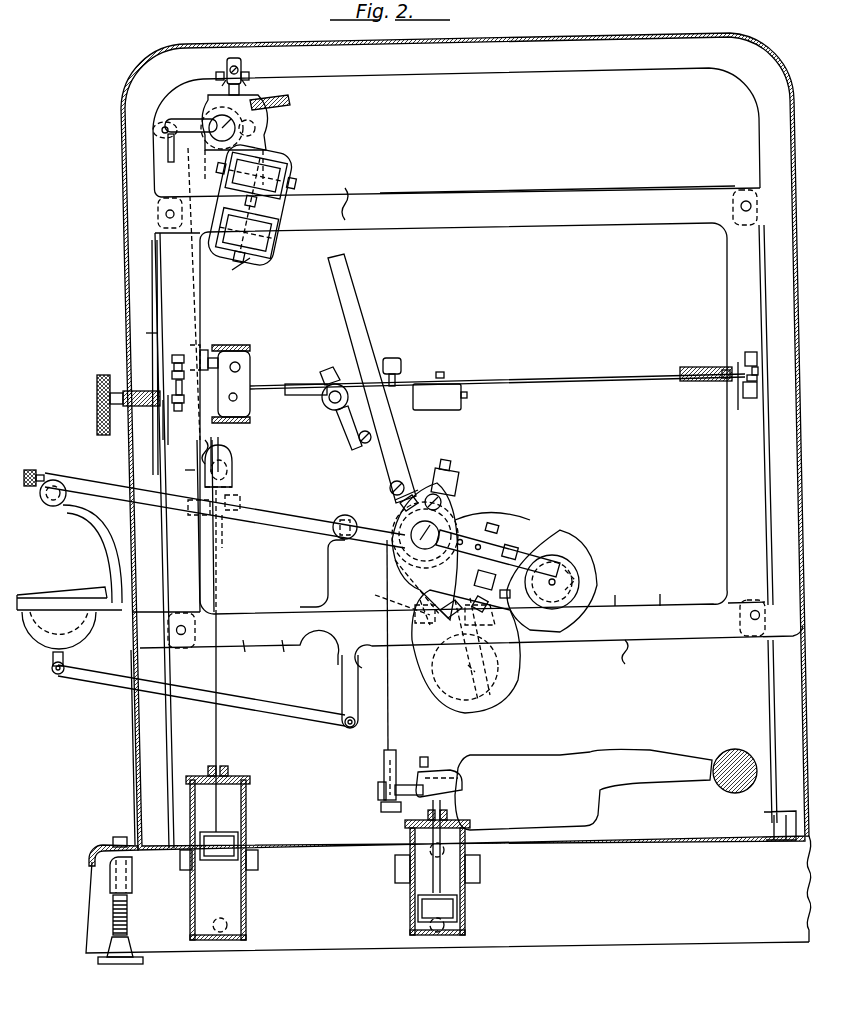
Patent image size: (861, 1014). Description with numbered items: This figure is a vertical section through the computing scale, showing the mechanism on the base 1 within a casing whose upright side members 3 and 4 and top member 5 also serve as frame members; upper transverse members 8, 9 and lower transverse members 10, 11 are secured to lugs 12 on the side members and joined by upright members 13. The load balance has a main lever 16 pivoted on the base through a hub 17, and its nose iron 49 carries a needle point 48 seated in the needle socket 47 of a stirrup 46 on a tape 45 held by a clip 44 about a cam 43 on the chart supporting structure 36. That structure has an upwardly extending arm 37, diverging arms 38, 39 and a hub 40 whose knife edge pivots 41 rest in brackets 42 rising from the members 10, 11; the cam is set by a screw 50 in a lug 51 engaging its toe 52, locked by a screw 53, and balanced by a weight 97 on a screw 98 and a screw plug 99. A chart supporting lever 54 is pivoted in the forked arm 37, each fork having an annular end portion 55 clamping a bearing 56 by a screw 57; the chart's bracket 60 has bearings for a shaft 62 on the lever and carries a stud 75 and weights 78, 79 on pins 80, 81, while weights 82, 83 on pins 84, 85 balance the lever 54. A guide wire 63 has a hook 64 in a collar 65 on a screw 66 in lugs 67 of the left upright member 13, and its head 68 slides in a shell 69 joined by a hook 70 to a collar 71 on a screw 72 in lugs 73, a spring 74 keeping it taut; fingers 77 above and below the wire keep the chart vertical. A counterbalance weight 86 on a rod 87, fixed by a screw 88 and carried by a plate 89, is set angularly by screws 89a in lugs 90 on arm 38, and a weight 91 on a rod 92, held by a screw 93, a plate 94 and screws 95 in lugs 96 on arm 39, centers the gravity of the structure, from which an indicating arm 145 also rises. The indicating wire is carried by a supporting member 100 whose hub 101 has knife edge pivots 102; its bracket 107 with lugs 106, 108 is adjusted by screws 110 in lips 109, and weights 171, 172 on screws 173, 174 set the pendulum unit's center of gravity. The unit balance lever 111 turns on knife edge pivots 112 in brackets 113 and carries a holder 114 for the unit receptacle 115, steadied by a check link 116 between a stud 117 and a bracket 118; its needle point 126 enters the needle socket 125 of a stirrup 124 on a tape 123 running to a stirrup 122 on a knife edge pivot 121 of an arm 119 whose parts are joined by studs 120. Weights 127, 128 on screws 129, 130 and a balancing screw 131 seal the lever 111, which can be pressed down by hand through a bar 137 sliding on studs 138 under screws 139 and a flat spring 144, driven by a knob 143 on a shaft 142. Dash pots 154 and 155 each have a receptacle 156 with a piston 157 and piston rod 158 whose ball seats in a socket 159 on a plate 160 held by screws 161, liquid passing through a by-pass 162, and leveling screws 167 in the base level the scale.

The base 1 is at (592, 846).
The upright side member 3 is at (133, 792).
The upright side member 4 is at (796, 661).
The top member 5 is at (553, 42).
The upper transverse member 8 is at (348, 213).
The upper transverse member 9 is at (432, 200).
The lower transverse member 10 is at (468, 448).
The lower transverse member 11 is at (451, 626).
The lugs 12 is at (150, 228).
The upright members 13 is at (193, 526).
The main lever 16 is at (640, 763).
The hub 17 is at (420, 480).
The supporting structure 36 is at (400, 508).
The upwardly extending arm 37 is at (397, 480).
The diverging arm 38 is at (578, 624).
The diverging arm 39 is at (422, 688).
The hub portion 40 is at (405, 545).
The knife edge pivots 41 is at (440, 535).
The brackets 42 is at (410, 598).
The cam 43 is at (420, 548).
The clip 44 is at (400, 503).
The tape 45 is at (388, 707).
The stirrup 46 is at (396, 768).
The needle socket 47 is at (383, 800).
The needle point 48 is at (390, 812).
The nose iron 49 is at (406, 796).
The screw 50 is at (480, 584).
The lug 51 is at (443, 604).
The toe 52 is at (410, 611).
The screw 53 is at (442, 502).
The chart supporting lever 54 is at (306, 400).
The annular end portion 55 is at (333, 410).
The bearing 56 is at (352, 420).
The screw 57 is at (333, 366).
The bracket 60 is at (250, 346).
The shaft 62 is at (281, 405).
The guide wire 63 is at (548, 380).
The hook 64 is at (178, 380).
The collar 65 is at (178, 387).
The screw 66 is at (184, 349).
The lugs 67 is at (147, 420).
The head 68 is at (718, 386).
The tubular shell 69 is at (690, 367).
The hook 70 is at (742, 400).
The collar 71 is at (758, 372).
The screw 72 is at (750, 352).
The lugs 73 is at (758, 356).
The spring 74 is at (698, 385).
The stud 75 is at (241, 372).
The fingers 77 is at (446, 378).
The weight 78 is at (205, 350).
The weight 79 is at (238, 398).
The pin 80 is at (213, 358).
The pin 81 is at (250, 420).
The weight 82 is at (401, 365).
The weight 83 is at (461, 408).
The pin 84 is at (445, 365).
The pin 85 is at (467, 395).
The weight 86 is at (552, 579).
The rod 87 is at (527, 551).
The screw 88 is at (552, 582).
The plate 89 is at (490, 608).
The screws 89a is at (468, 528).
The lugs 90 is at (512, 593).
The weight 91 is at (500, 676).
The rod 92 is at (459, 665).
The screw 93 is at (470, 675).
The plate 94 is at (405, 595).
The screws 95 is at (412, 622).
The lugs 96 is at (480, 621).
The balance weight 97 is at (452, 476).
The screw 98 is at (447, 462).
The balance screw plug 99 is at (398, 591).
The supporting member 100 is at (234, 117).
The hub portion 101 is at (205, 145).
The knife edge pivots 102 is at (270, 148).
The lug 106 is at (234, 58).
The bracket 107 is at (244, 74).
The lug 108 is at (252, 90).
The lips 109 is at (226, 78).
The screws 110 is at (216, 76).
The main lever 111 is at (225, 510).
The knife edge pivots 112 is at (340, 518).
The brackets 113 is at (332, 568).
The holder 114 is at (108, 532).
The unit receptacle 115 is at (72, 600).
The check link 116 is at (105, 682).
The stud 117 is at (53, 660).
The bracket 118 is at (342, 689).
The arm 119 is at (183, 124).
The studs 120 is at (256, 123).
The knife edge pivot 121 is at (158, 131).
The stirrup 122 is at (168, 150).
The tape 123 is at (190, 165).
The stirrup 124 is at (232, 462).
The needle socket 125 is at (230, 482).
The needle point 126 is at (205, 484).
The weight 127 is at (580, 542).
The weight 128 is at (500, 528).
The screw 129 is at (578, 578).
The screw 130 is at (497, 516).
The screw 131 is at (34, 490).
The bar 137 is at (156, 287).
The studs 138 is at (140, 322).
The screws 139 is at (180, 451).
The short shaft 142 is at (128, 404).
The knob 143 is at (97, 392).
The flat spring 144 is at (177, 420).
The indicating arm 145 is at (346, 298).
The dash pot 154 is at (410, 905).
The dash pot 155 is at (246, 910).
The receptacle 156 is at (246, 936).
The piston 157 is at (330, 853).
The piston rod 158 is at (218, 750).
The socket 159 is at (234, 533).
The plate 160 is at (232, 495).
The screws 161 is at (183, 505).
The by-pass 162 is at (221, 920).
The leveling screws 167 is at (128, 920).
The weight 171 is at (262, 176).
The weight 172 is at (268, 236).
The screw 173 is at (282, 170).
The screw 174 is at (231, 278).